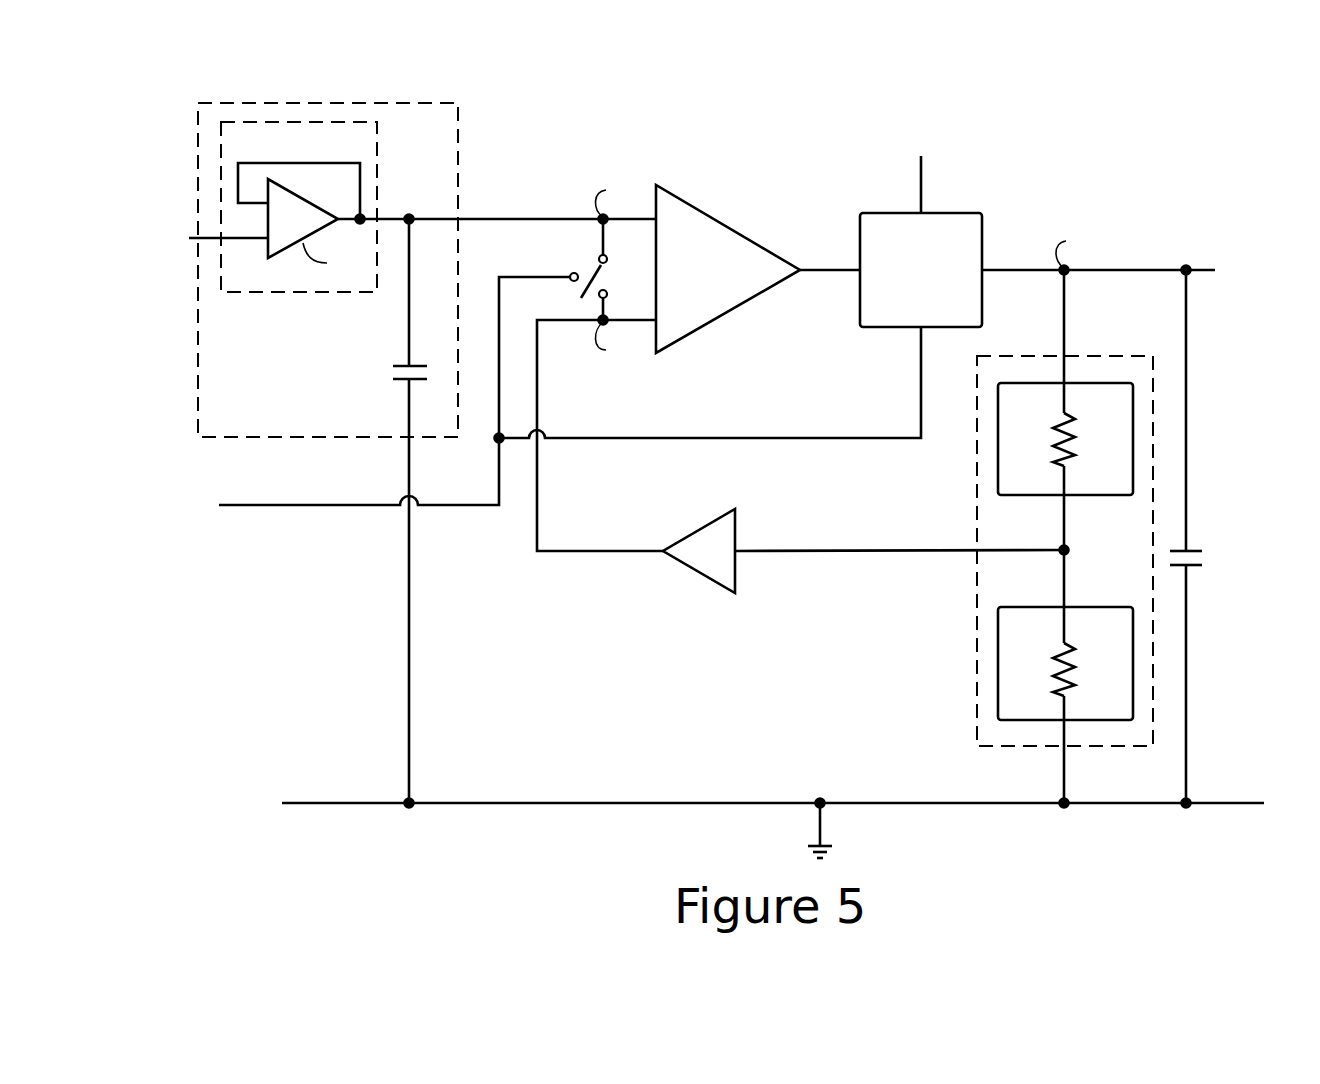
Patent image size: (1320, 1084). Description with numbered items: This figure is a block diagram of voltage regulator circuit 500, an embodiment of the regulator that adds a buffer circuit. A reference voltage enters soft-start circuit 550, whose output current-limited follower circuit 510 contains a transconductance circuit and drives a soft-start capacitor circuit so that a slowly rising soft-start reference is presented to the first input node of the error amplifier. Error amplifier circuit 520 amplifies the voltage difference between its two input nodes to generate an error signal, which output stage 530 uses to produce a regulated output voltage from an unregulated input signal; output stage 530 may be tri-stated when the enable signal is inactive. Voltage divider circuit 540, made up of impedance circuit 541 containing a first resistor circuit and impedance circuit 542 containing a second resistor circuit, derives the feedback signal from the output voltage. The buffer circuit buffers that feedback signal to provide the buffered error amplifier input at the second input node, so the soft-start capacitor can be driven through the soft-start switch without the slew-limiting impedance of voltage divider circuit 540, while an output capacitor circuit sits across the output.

The voltage regulator circuit 500 is at (803, 101).
The output current-limited follower circuit 510 is at (323, 152).
The error amplifier circuit 520 is at (728, 281).
The output stage 530 is at (902, 310).
The voltage divider circuit 540 is at (1118, 541).
The impedance circuit 541 is at (1128, 423).
The impedance circuit 542 is at (1128, 644).
The soft-start circuit 550 is at (443, 137).